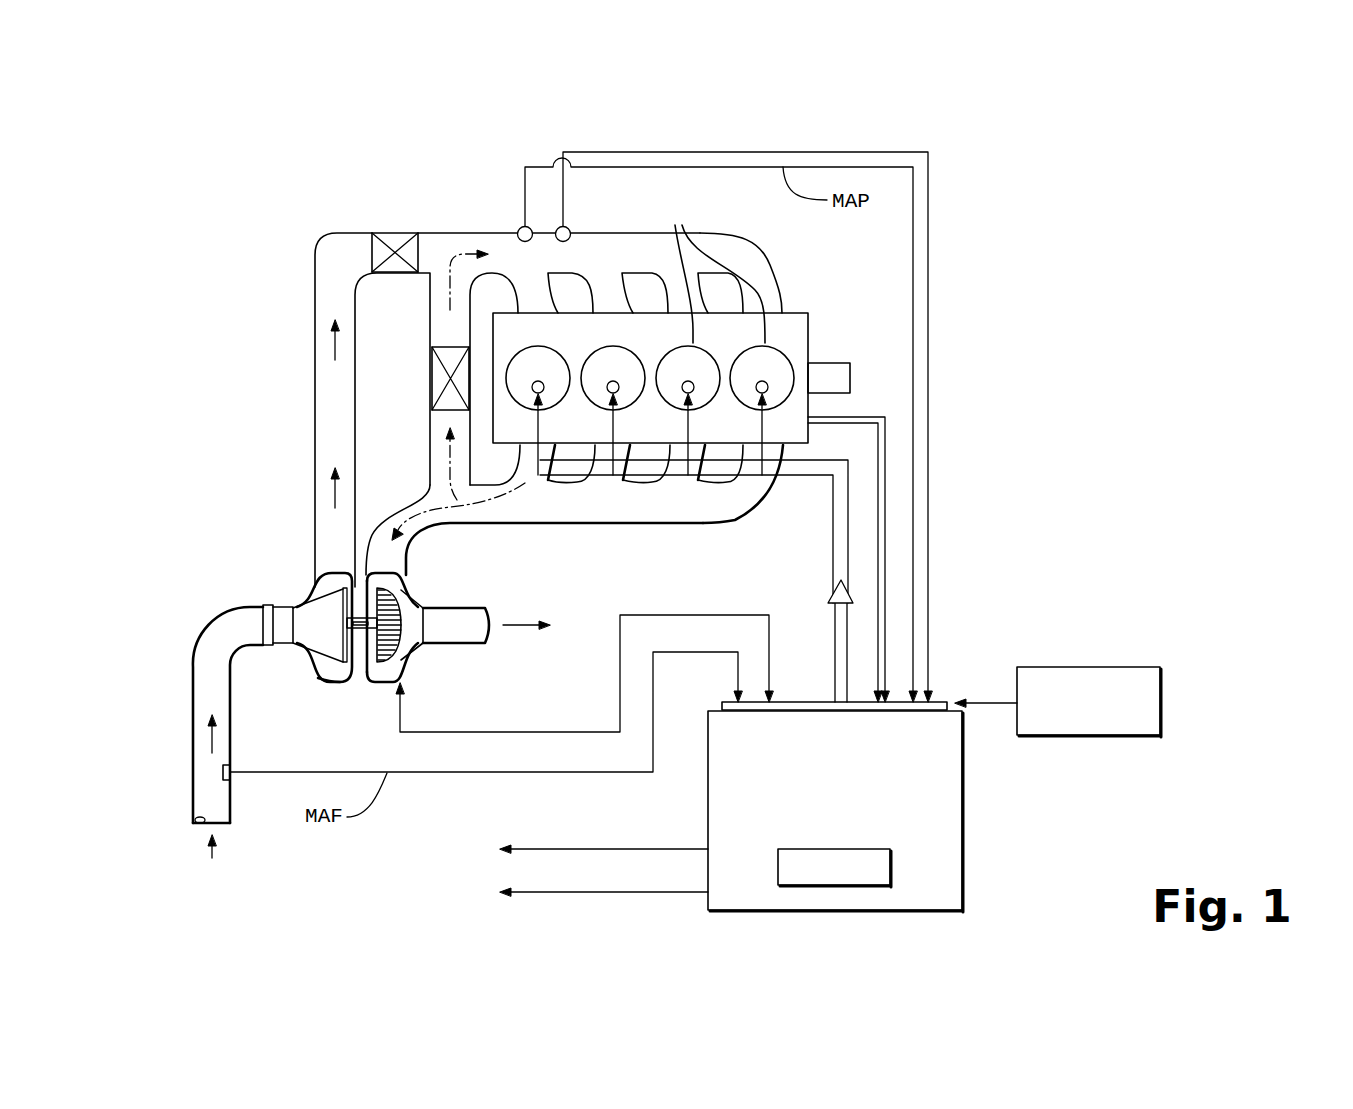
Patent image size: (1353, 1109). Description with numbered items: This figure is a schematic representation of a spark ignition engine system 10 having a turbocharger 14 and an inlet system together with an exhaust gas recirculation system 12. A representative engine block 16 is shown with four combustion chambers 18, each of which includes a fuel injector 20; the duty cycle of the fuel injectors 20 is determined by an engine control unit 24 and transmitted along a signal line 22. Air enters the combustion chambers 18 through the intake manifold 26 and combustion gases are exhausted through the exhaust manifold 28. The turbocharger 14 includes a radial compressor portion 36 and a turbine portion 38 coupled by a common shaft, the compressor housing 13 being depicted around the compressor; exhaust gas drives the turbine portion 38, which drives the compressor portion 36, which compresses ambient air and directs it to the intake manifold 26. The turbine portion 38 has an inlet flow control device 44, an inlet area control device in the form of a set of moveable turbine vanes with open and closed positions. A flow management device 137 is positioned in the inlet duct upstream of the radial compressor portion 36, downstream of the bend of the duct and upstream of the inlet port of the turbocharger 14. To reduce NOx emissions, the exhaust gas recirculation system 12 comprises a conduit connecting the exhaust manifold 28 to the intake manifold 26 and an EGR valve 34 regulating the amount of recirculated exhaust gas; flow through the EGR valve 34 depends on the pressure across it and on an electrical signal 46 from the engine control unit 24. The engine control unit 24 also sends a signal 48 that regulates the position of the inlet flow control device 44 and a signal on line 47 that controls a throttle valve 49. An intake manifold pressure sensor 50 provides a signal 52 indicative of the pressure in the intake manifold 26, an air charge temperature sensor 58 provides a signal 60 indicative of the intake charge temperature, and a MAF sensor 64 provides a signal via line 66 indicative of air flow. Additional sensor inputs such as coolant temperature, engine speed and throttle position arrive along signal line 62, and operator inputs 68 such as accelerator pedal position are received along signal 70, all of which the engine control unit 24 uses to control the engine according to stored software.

The spark ignition engine system 10 is at (1026, 173).
The exhaust gas recirculation system 12 is at (428, 452).
The compressor housing 13 is at (323, 676).
The turbocharger 14 is at (358, 620).
The engine block 16 is at (800, 313).
The combustion chambers 18 is at (713, 271).
The fuel injector 20 is at (768, 387).
The signal line 22 is at (832, 575).
The engine control unit 24 is at (963, 807).
The intake manifold 26 is at (752, 247).
The exhaust manifold 28 is at (735, 523).
The EGR valve 34 is at (430, 360).
The radial compressor portion 36 is at (317, 600).
The turbine portion 38 is at (413, 650).
The inlet flow control device 44 is at (397, 592).
The signal 46 is at (697, 897).
The line 47 is at (700, 848).
The signal 48 is at (510, 732).
The throttle valve 49 is at (372, 248).
The intake manifold pressure sensor 50 is at (520, 225).
The signal 52 is at (913, 503).
The air charge temperature sensor 58 is at (567, 228).
The signal 60 is at (930, 402).
The signal line 62 is at (885, 587).
The MAF sensor 64 is at (233, 772).
The line 66 is at (510, 773).
The operator inputs 68 is at (1088, 667).
The signal 70 is at (988, 703).
The flow management device 137 is at (267, 603).